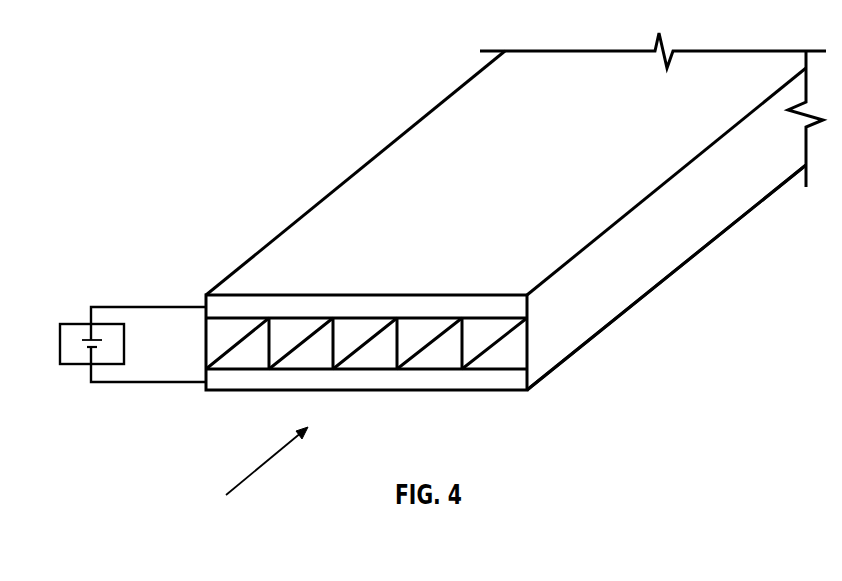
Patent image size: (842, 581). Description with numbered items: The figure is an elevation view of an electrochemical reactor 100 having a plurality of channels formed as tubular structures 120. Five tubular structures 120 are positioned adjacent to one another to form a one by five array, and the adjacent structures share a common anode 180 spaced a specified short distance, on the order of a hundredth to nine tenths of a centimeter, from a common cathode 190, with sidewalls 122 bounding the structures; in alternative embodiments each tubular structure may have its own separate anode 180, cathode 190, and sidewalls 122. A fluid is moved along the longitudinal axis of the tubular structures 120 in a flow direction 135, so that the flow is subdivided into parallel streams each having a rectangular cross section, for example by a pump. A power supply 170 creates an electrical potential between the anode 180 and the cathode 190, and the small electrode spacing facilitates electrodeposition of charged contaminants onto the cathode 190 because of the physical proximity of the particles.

The electrochemical reactor 100 is at (165, 39).
The tubular structures 120 is at (497, 354).
The sidewalls 122 is at (606, 317).
The flow direction 135 is at (268, 463).
The power supply 170 is at (83, 322).
The common anode 180 is at (298, 232).
The common cathode 190 is at (268, 384).